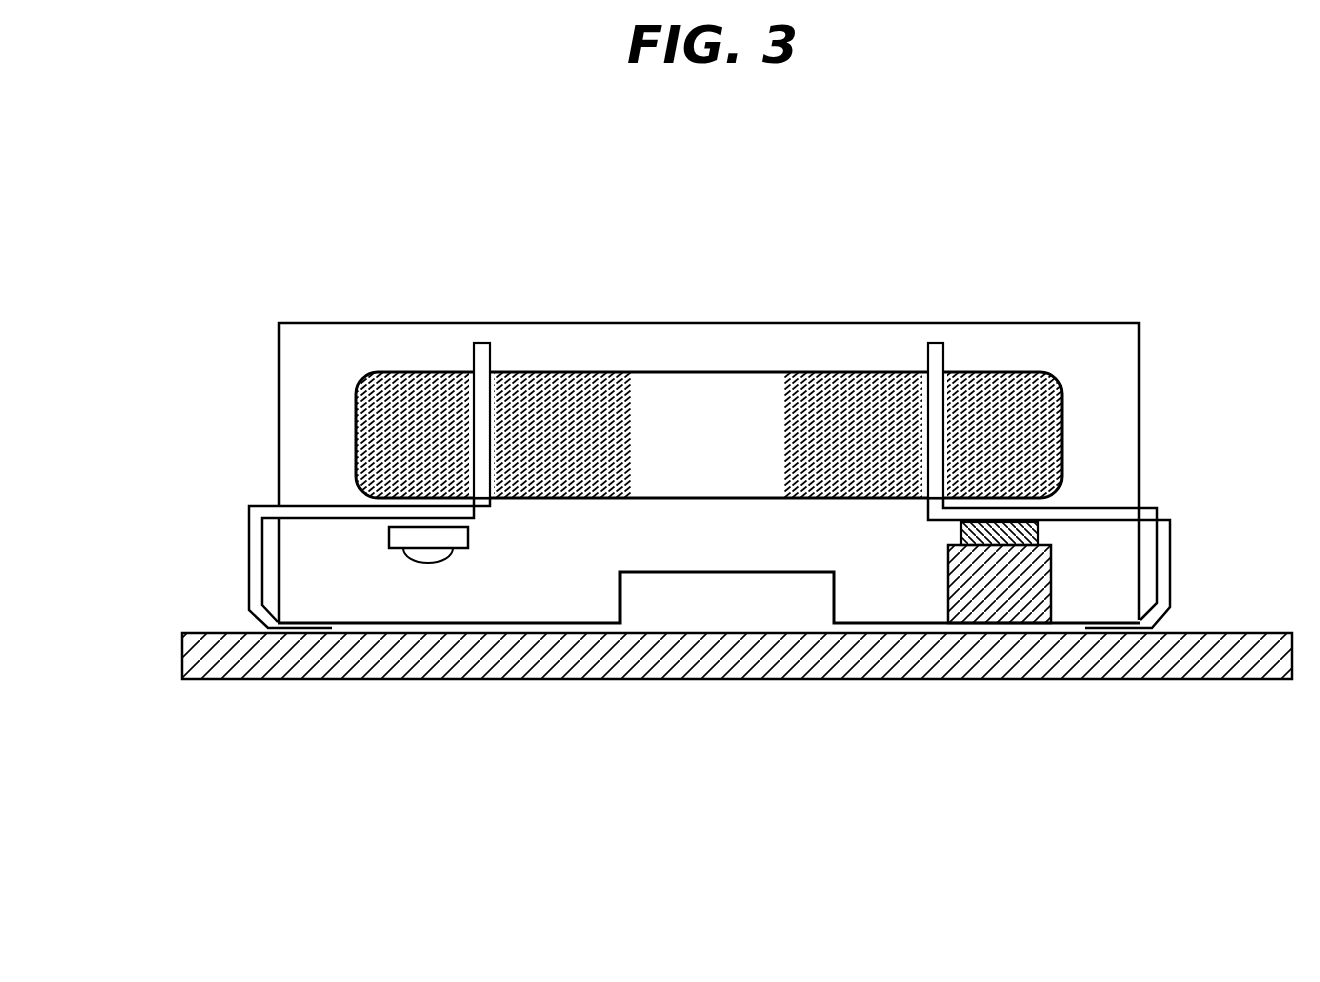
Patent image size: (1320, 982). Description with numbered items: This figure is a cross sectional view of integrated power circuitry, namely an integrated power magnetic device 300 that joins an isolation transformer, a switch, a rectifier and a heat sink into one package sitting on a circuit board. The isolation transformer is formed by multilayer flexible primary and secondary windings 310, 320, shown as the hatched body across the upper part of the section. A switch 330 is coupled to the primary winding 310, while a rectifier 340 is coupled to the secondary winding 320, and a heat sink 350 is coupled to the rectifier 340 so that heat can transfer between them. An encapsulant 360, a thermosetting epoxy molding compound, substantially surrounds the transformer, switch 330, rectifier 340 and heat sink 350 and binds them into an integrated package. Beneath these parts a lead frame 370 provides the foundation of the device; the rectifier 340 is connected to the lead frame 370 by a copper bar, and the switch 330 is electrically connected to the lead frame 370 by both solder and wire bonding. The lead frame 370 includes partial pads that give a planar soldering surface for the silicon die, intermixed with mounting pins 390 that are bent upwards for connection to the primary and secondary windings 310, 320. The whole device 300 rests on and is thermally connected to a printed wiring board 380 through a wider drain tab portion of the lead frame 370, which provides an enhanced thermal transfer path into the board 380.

The integrated power magnetic device 300 is at (356, 146).
The primary winding 310 is at (545, 378).
The secondary winding 320 is at (849, 383).
The switch 330 is at (437, 563).
The rectifier 340 is at (938, 533).
The heat sink 350 is at (1002, 610).
The encapsulant 360 is at (699, 366).
The lead frame 370 is at (1252, 550).
The printed wiring board 380 is at (287, 682).
The mounting pins 390 is at (476, 356).